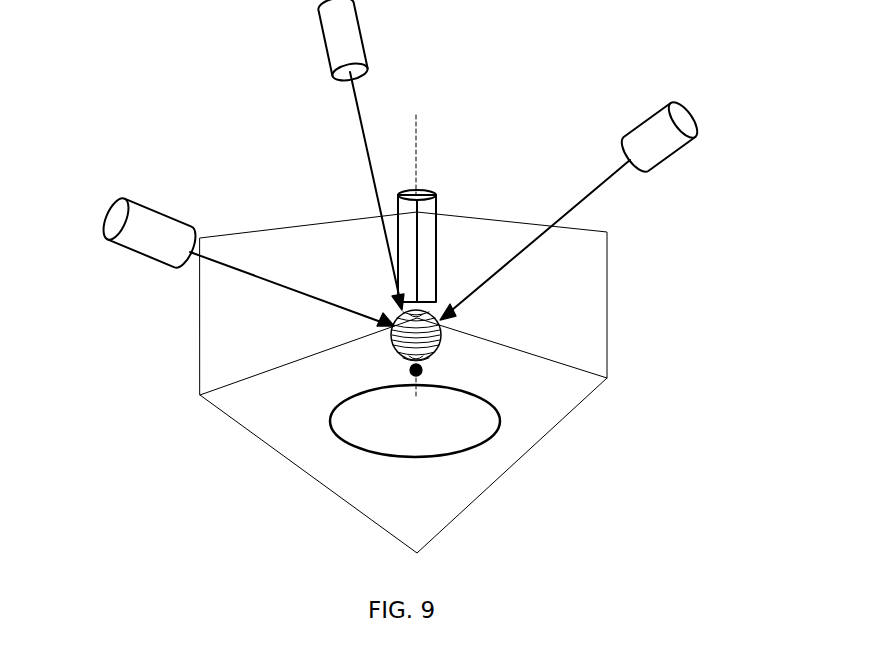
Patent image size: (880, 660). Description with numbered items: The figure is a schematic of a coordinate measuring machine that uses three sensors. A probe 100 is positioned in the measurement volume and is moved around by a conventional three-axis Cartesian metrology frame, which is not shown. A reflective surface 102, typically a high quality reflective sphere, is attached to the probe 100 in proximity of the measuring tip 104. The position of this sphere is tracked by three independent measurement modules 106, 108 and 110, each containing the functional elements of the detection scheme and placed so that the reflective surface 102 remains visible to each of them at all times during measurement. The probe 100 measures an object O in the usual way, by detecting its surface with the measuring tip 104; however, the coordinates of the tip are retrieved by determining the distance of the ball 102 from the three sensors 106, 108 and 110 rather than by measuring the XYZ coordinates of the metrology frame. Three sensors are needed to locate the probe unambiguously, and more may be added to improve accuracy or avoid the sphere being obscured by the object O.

The probe 100 is at (437, 196).
The reflective surface 102 is at (441, 338).
The measuring tip 104 is at (395, 367).
The measurement module 106 is at (107, 238).
The measurement module 108 is at (322, 62).
The measurement module 110 is at (683, 146).
The object O is at (352, 447).